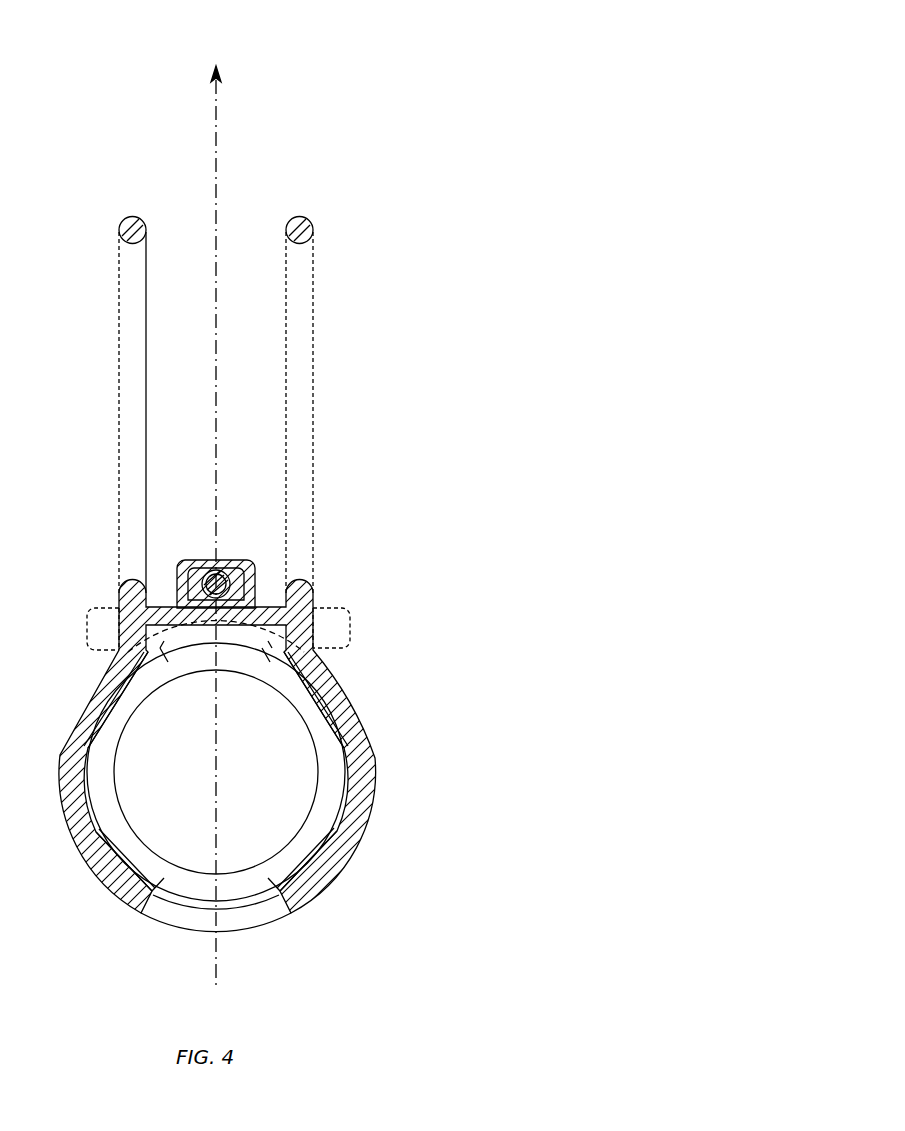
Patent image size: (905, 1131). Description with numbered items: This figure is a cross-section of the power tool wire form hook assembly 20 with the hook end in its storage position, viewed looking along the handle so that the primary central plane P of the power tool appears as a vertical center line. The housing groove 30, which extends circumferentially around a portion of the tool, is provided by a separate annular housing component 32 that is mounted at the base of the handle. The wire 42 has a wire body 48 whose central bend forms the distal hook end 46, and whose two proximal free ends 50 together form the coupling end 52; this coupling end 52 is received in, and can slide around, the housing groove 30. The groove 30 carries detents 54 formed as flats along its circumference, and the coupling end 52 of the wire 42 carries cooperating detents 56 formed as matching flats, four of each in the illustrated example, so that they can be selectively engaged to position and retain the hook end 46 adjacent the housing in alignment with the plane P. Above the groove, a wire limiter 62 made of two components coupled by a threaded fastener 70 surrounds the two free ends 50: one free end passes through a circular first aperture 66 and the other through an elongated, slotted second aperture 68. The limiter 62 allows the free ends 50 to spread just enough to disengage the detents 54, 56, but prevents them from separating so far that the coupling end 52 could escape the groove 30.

The clamp assembly 20 is at (470, 64).
The primary central plane P is at (218, 100).
The housing groove 30 is at (238, 906).
The housing component 32 is at (162, 930).
The wire 42 is at (314, 412).
The hook end 46 is at (346, 311).
The wire body 48 is at (112, 303).
The free ends 50 is at (66, 780).
The coupling end 52 is at (398, 768).
The detent 54 is at (136, 700).
The cooperating detent 56 is at (100, 700).
The wire limiter 62 is at (378, 624).
The first aperture 66 is at (118, 620).
The second aperture 68 is at (326, 620).
The threaded fastener 70 is at (218, 580).